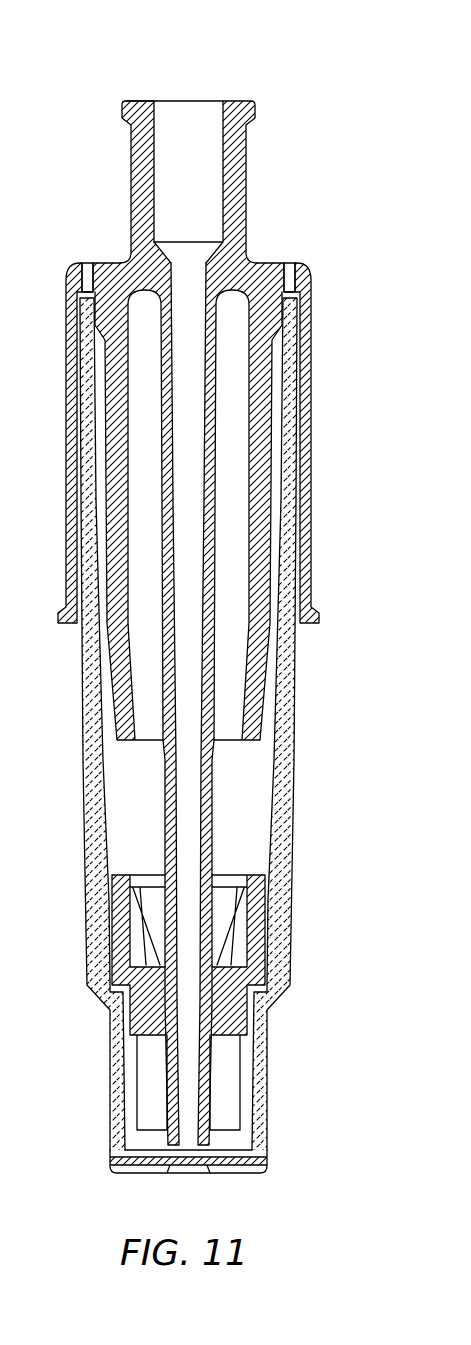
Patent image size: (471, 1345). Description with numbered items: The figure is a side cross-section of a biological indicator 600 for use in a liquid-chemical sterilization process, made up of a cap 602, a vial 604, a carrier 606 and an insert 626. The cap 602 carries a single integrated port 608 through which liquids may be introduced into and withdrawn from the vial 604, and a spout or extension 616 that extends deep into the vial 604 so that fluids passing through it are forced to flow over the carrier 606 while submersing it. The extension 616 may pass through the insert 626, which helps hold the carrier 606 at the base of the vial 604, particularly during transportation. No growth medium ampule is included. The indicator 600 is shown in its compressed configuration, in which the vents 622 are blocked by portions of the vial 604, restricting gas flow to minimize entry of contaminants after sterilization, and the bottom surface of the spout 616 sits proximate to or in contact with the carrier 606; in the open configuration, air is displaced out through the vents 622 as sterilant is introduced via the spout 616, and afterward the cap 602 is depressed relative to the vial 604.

The biological indicator 600 is at (218, 605).
The cap 602 is at (309, 400).
The vial 604 is at (288, 876).
The carrier 606 is at (240, 1152).
The port 608 is at (246, 160).
The spout 616 is at (210, 802).
The vents 622 is at (84, 248).
The insert 626 is at (257, 948).